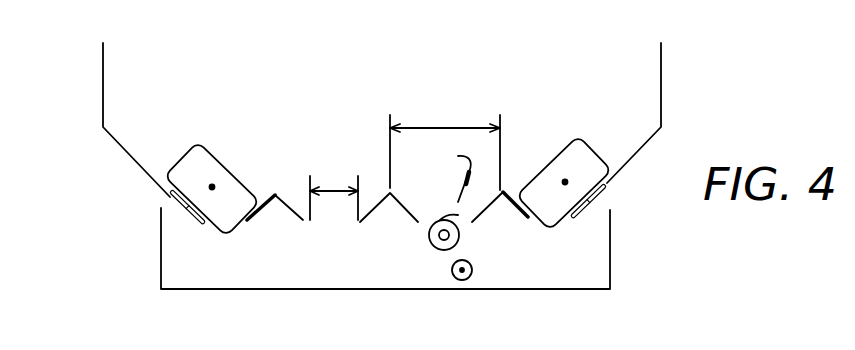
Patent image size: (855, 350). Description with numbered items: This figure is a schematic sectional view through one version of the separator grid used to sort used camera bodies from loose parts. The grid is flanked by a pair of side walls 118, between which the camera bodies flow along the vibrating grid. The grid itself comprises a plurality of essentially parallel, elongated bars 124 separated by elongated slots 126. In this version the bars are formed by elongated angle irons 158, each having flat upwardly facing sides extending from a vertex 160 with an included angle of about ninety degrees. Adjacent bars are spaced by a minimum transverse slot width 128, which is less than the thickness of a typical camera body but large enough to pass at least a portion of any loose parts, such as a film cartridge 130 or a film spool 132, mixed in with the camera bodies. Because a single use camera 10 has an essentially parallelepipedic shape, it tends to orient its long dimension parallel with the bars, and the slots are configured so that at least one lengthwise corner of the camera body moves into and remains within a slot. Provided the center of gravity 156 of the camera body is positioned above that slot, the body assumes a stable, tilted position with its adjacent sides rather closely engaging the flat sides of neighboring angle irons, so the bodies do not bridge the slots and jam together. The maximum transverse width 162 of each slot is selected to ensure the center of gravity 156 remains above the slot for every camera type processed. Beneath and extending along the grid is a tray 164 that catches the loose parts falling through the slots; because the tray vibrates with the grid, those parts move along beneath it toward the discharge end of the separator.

The single use camera 10 is at (166, 173).
The side walls 118 is at (103, 97).
The elongated bars 124 is at (512, 192).
The elongated slots 126 is at (415, 171).
The minimum transverse slot width 128 is at (335, 191).
The film cartridge 130 is at (461, 243).
The film spool 132 is at (452, 268).
The center of gravity 156 is at (212, 187).
The elongated angle irons 158 is at (257, 217).
The vertex 160 is at (278, 190).
The maximum transverse width 162 is at (445, 127).
The tray 164 is at (573, 292).